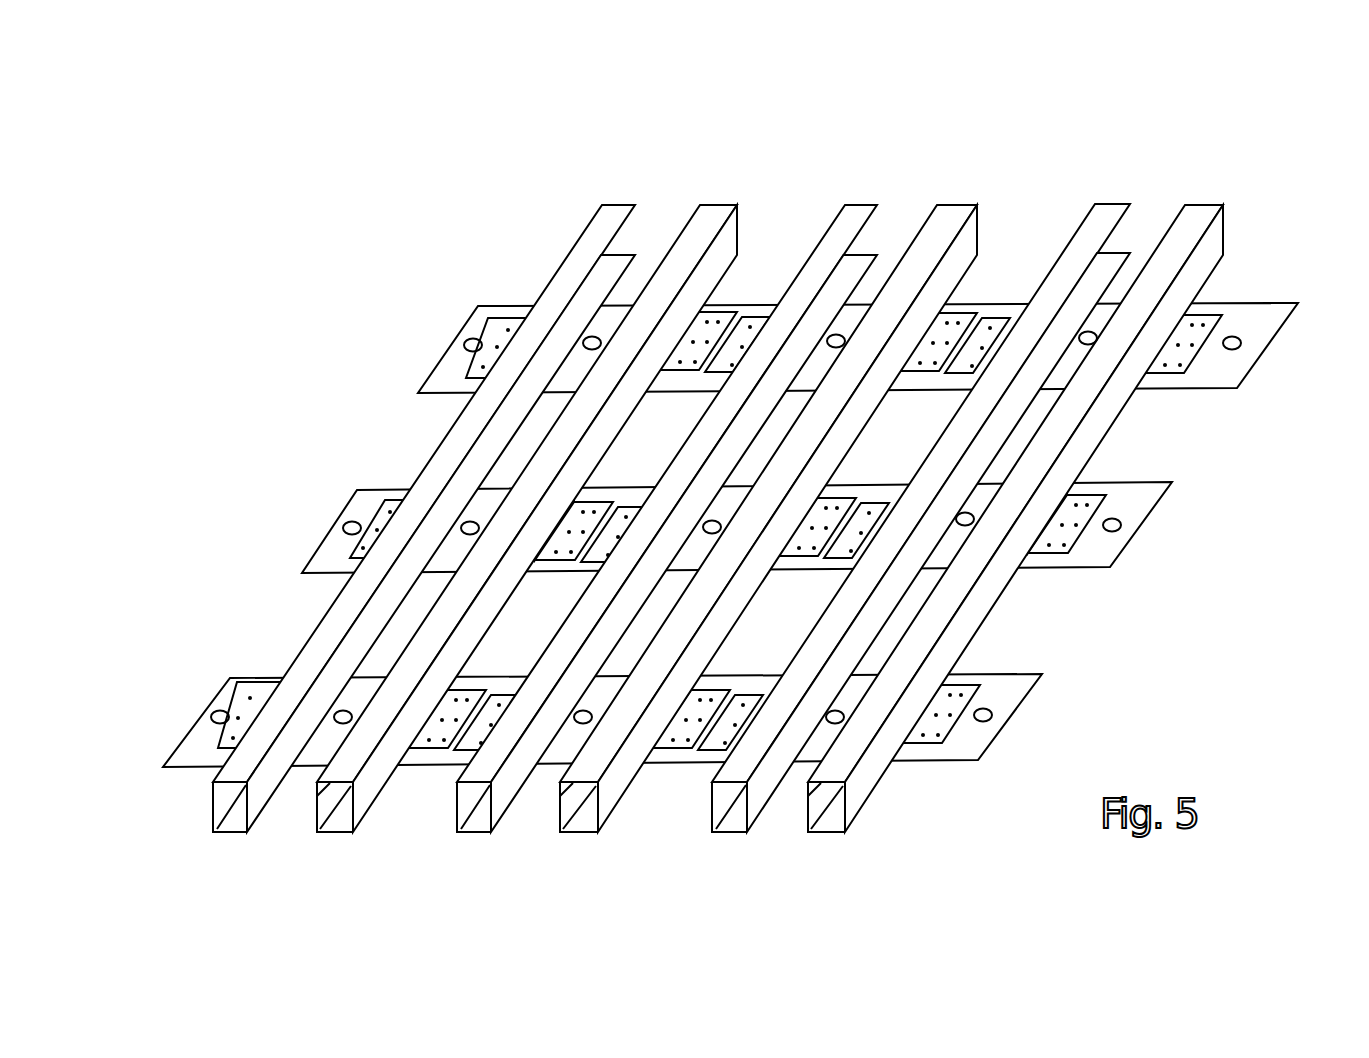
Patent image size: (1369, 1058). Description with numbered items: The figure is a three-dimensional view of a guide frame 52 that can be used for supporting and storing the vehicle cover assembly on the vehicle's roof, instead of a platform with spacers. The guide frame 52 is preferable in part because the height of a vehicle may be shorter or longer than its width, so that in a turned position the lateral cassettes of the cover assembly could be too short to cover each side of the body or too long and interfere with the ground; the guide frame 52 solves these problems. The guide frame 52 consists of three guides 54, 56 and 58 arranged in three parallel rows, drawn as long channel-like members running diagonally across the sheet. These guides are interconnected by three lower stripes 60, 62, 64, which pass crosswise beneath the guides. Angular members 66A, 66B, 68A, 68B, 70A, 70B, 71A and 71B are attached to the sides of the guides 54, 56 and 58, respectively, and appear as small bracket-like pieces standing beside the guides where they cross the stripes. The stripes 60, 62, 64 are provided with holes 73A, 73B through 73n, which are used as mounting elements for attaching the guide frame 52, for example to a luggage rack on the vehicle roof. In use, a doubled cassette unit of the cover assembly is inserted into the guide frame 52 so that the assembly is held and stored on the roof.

The guide frame 52 is at (865, 181).
The guide 54 is at (655, 236).
The guide 56 is at (915, 212).
The guide 58 is at (1169, 198).
The lower stripe 60 is at (783, 297).
The lower stripe 62 is at (973, 502).
The lower stripe 64 is at (817, 745).
The angular member 66A is at (937, 733).
The angular member 66B is at (262, 700).
The angular member 68A is at (1065, 542).
The angular member 68B is at (355, 523).
The angular member 70A is at (1200, 332).
The angular member 70B is at (508, 323).
The angular member 71A is at (1013, 313).
The angular member 71B is at (922, 320).
The hole 73A is at (1241, 344).
The hole 73B is at (466, 344).
The hole 73n is at (992, 717).